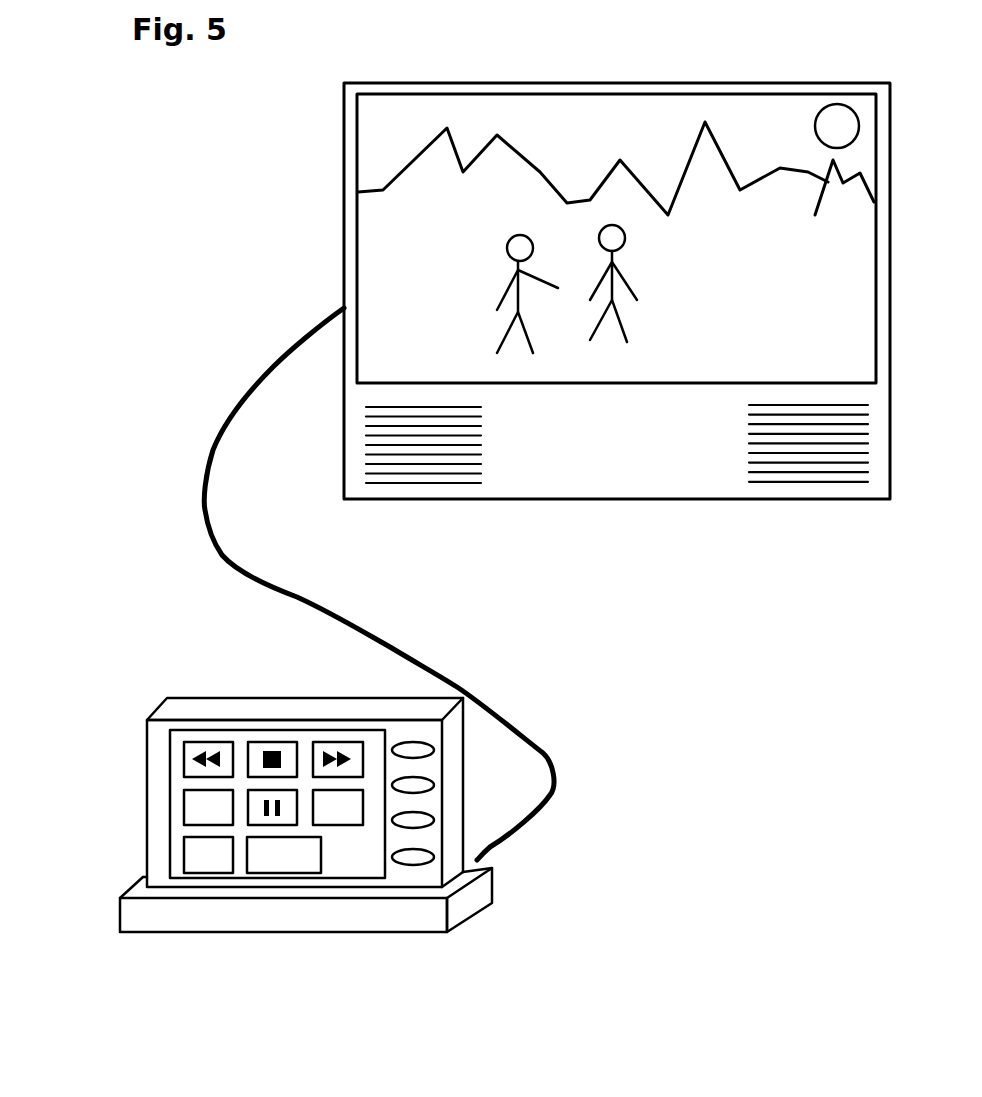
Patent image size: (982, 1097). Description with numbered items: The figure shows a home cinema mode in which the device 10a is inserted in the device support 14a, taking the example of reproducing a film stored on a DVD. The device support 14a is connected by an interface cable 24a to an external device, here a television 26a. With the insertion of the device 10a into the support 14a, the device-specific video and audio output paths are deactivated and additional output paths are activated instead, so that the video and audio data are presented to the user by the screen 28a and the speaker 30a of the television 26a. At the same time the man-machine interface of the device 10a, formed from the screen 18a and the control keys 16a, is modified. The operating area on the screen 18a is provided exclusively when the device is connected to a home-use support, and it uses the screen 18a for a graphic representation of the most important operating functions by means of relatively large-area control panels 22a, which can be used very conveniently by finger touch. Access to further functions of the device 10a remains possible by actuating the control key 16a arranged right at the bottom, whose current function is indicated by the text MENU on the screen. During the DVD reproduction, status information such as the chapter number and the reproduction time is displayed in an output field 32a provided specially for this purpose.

The device 10a is at (233, 708).
The device support 14a is at (397, 917).
The control keys 16a is at (420, 820).
The screen 18a is at (373, 747).
The control panels 22a is at (293, 752).
The interface cable 24a is at (215, 541).
The television 26a is at (743, 88).
The screen 28a is at (540, 128).
The speaker 30a is at (775, 458).
The output field 32a is at (287, 862).